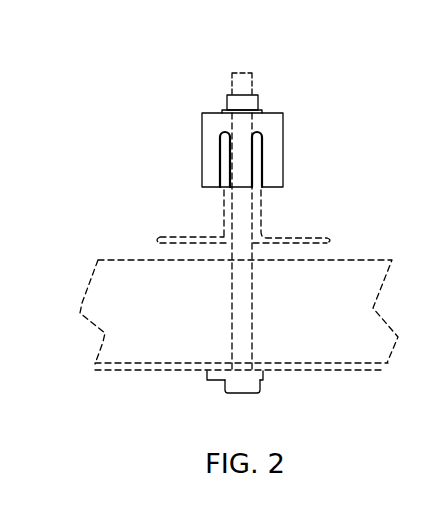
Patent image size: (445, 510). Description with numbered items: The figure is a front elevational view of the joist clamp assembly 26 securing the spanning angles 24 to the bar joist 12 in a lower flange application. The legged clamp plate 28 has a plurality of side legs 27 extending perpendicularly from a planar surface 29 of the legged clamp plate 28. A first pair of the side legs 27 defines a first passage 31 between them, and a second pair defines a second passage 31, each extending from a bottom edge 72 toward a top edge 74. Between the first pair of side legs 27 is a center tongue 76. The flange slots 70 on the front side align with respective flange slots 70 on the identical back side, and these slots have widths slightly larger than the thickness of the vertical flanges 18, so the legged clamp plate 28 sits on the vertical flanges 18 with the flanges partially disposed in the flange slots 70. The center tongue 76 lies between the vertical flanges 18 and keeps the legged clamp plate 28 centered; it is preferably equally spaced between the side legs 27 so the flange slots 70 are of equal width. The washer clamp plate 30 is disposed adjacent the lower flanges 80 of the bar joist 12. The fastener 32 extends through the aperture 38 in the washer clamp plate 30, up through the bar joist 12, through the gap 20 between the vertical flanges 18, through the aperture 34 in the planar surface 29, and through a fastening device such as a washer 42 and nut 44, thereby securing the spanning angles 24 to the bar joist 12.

The bar joist 12 is at (355, 273).
The vertical flanges 18 is at (222, 146).
The gap 20 is at (203, 117).
The spanning angles 24 is at (160, 238).
The joist clamp assembly 26 is at (366, 95).
The side legs 27 is at (217, 172).
The legged clamp plate 28 is at (283, 114).
The planar surface 29 is at (280, 110).
The washer clamp plate 30 is at (275, 378).
The passage 31 is at (245, 191).
The fastener 32 is at (238, 328).
The aperture 34 is at (214, 112).
The aperture 38 is at (232, 372).
The washer 42 is at (271, 108).
The nut 44 is at (265, 108).
The flange slots 70 is at (222, 133).
The bottom edge 72 is at (203, 187).
The top edge 74 is at (206, 113).
The center tongue 76 is at (213, 160).
The lower flanges 80 is at (337, 368).